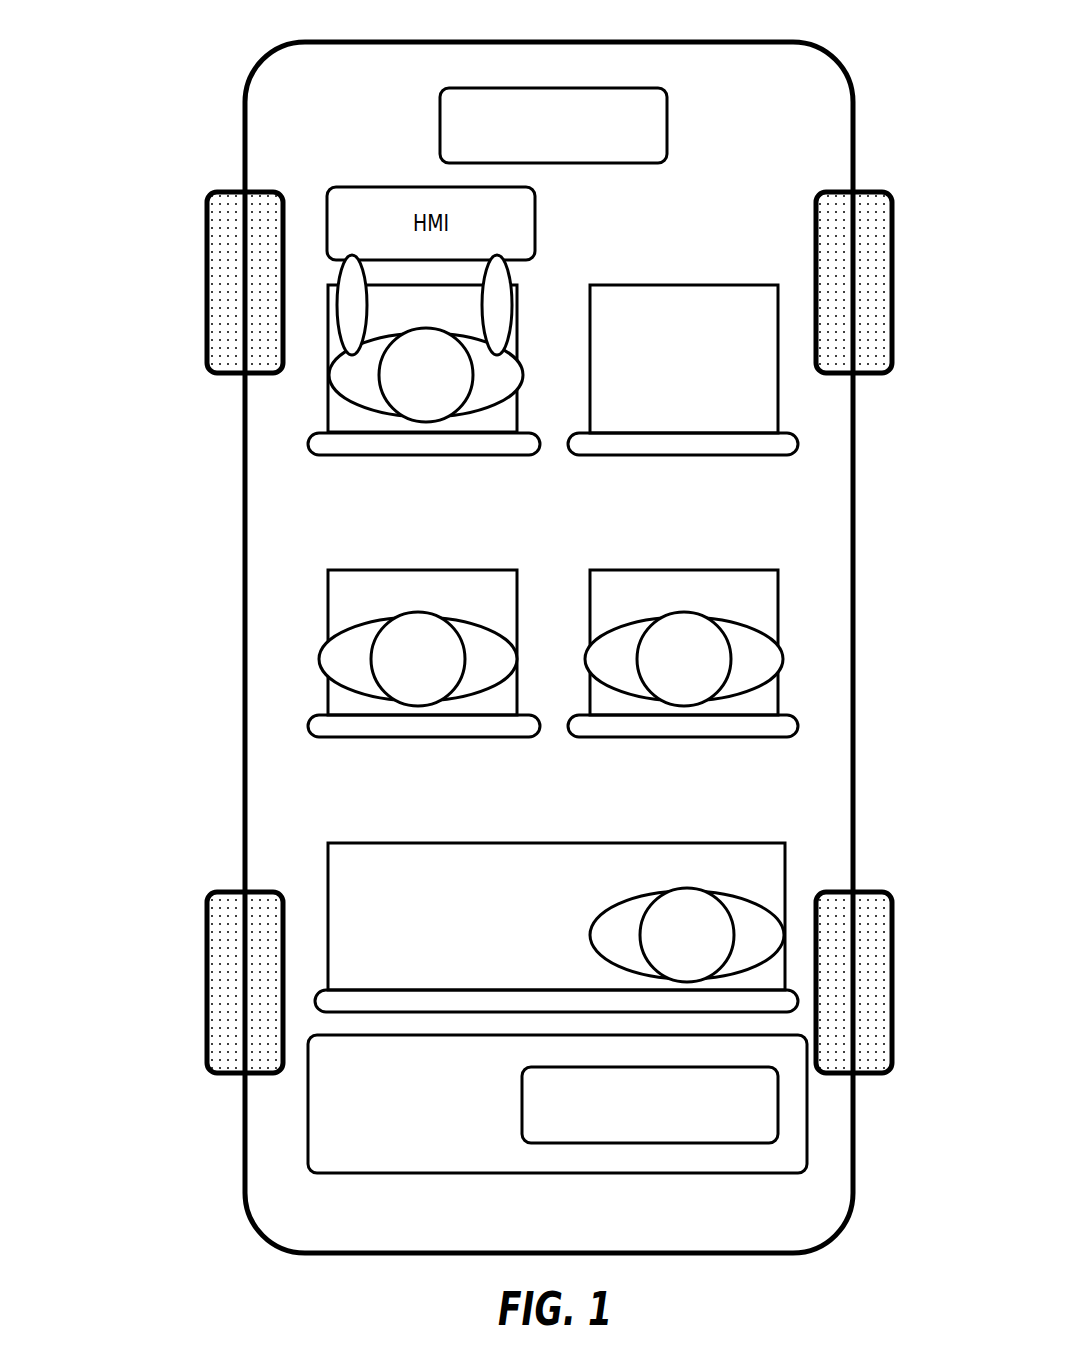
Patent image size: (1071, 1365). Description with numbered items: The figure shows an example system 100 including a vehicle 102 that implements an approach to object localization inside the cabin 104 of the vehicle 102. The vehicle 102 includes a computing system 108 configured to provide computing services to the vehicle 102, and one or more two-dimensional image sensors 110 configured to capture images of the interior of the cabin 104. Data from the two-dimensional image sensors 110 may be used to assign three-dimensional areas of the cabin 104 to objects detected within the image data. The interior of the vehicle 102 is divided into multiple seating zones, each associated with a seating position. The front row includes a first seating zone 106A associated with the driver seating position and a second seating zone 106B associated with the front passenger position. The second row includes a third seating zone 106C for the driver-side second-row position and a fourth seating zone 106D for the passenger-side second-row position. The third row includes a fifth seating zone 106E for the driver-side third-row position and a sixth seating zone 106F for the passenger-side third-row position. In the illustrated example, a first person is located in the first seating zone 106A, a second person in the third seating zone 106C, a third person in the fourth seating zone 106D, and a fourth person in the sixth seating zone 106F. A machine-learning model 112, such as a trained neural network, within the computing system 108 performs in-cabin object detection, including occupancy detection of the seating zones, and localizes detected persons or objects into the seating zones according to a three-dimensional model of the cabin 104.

The system 100 is at (168, 29).
The vehicle 102 is at (848, 74).
The cabin 104 is at (567, 659).
The first seating zone 106A is at (445, 321).
The second seating zone 106B is at (707, 321).
The third seating zone 106C is at (445, 606).
The fourth seating zone 106D is at (707, 606).
The fifth seating zone 106E is at (445, 879).
The sixth seating zone 106F is at (707, 879).
The computing system 108 is at (424, 1106).
The 2D image sensor 110 is at (570, 152).
The machine-learning model 112 is at (667, 1132).